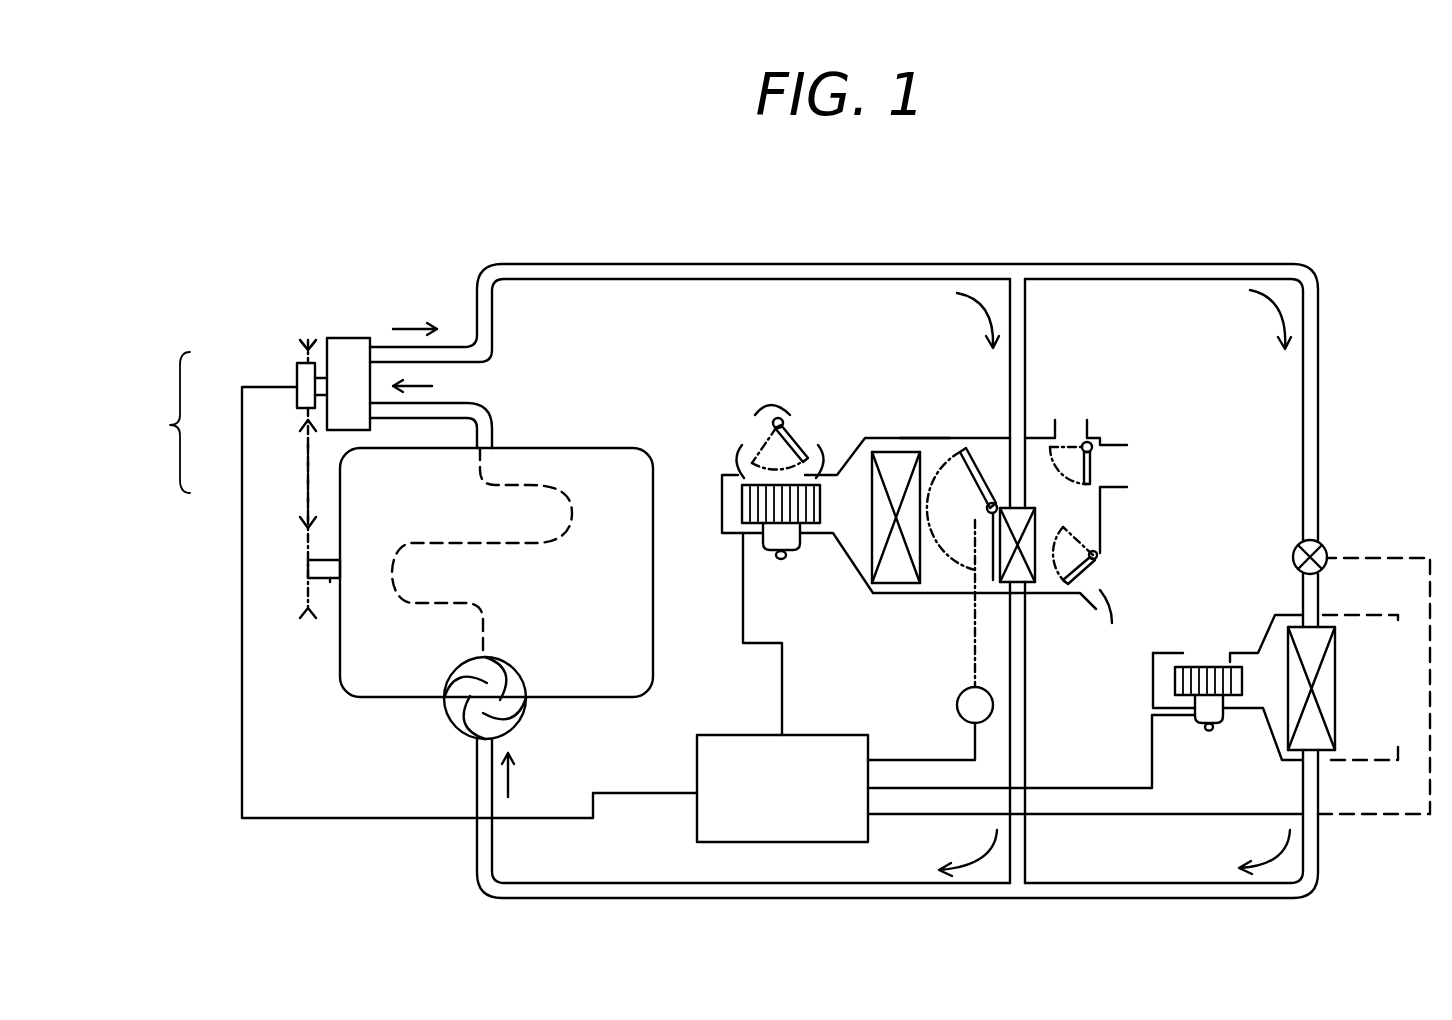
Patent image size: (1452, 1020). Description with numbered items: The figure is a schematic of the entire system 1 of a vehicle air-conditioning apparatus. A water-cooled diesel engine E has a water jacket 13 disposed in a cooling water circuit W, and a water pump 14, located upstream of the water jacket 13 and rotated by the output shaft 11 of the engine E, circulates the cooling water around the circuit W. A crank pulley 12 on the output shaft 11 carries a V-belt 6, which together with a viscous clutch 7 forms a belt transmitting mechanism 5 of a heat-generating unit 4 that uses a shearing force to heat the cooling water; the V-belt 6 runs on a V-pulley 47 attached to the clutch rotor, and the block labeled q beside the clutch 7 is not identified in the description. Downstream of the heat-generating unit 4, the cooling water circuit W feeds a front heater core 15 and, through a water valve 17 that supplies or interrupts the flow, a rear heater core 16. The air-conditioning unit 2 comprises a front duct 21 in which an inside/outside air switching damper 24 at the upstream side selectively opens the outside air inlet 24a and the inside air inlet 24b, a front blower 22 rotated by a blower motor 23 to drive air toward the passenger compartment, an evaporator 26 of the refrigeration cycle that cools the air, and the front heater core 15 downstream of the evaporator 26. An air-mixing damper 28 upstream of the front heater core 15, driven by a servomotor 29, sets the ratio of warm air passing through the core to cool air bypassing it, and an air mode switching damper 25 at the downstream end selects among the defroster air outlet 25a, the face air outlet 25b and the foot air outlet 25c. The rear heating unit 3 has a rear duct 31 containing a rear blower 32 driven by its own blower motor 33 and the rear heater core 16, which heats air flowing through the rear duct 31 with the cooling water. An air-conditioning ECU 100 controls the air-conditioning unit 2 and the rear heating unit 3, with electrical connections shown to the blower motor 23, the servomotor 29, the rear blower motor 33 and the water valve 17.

The entire system 1 is at (372, 243).
The air-conditioning unit 2 is at (770, 395).
The rear heating unit 3 is at (1275, 610).
The heat-generating unit 4 is at (285, 315).
The belt transmitting mechanism 5 is at (165, 422).
The V-belt 6 is at (306, 478).
The viscous clutch 7 is at (297, 380).
The output shaft 11 is at (330, 580).
The crank pulley 12 is at (308, 550).
The water jacket 13 is at (541, 483).
The water pump 14 is at (463, 728).
The front heater core 15 is at (1032, 593).
The rear heater core 16 is at (1300, 755).
The water valve 17 is at (1325, 545).
The front duct 21 is at (925, 438).
The front blower 22 is at (742, 500).
The blower motor 23 is at (771, 552).
The inside/outside air switching damper 24 is at (800, 432).
The outside air inlet 24a is at (752, 445).
The inside air inlet 24b is at (813, 445).
The air mode switching damper 25 is at (1097, 463).
The defroster air outlet 25a is at (1068, 425).
The face air outlet 25b is at (1113, 475).
The foot air outlet 25c is at (1107, 629).
The evaporator 26 is at (890, 593).
The air-mixing damper 28 is at (983, 455).
The servomotor 29 is at (956, 705).
The rear duct 31 is at (1290, 620).
The rear blower 32 is at (1175, 682).
The blower motor 33 is at (1195, 718).
The V-pulley 47 is at (308, 348).
The air-conditioning ECU 100 is at (697, 815).
The engine E is at (600, 448).
The cooling water circuit W is at (560, 256).
The heat source q is at (350, 338).